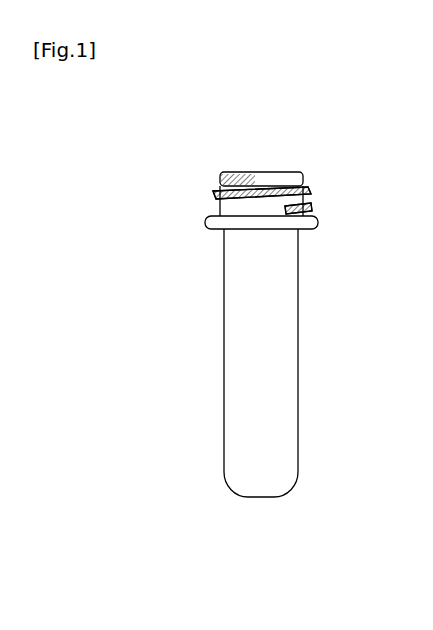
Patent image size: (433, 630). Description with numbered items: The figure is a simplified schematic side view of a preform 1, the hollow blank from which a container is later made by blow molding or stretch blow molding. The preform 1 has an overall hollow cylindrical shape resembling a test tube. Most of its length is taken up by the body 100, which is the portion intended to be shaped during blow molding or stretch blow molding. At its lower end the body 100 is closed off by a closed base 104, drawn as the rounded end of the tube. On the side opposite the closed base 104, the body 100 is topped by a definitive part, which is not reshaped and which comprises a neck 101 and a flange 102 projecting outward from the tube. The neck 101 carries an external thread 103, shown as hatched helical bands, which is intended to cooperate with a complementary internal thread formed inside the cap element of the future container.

The preform 1 is at (305, 481).
The body 100 is at (224, 378).
The neck 101 is at (277, 176).
The flange 102 is at (205, 221).
The external thread 103 is at (222, 181).
The closed base 104 is at (245, 495).